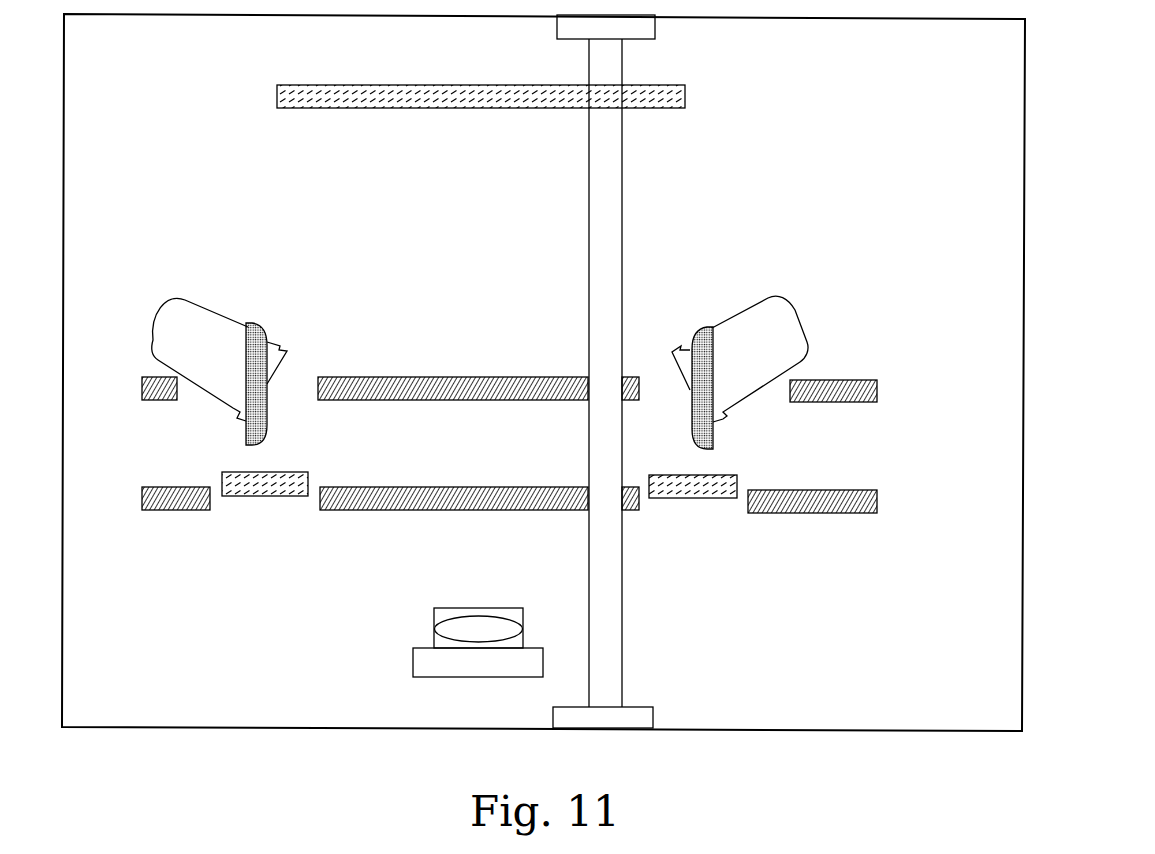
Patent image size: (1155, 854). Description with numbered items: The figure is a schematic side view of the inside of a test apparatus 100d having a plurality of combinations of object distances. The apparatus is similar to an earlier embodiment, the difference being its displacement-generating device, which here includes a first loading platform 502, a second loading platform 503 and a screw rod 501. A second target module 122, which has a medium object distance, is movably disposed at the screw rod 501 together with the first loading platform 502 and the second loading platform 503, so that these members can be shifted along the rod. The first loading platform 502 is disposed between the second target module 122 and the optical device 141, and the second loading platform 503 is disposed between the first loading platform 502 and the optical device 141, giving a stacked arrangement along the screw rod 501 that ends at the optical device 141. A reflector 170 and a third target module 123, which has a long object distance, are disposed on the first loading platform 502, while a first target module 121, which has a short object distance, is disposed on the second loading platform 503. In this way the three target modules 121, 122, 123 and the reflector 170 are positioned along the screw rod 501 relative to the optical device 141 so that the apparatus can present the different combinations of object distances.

The test apparatus 100d is at (1140, 126).
The screw rod 501 is at (623, 186).
The second target module 122 is at (677, 94).
The first loading platform 502 is at (877, 388).
The second loading platform 503 is at (877, 497).
The first target module 121 is at (285, 496).
The third target module 123 is at (192, 308).
The reflector 170 is at (265, 333).
The optical device 141 is at (433, 665).